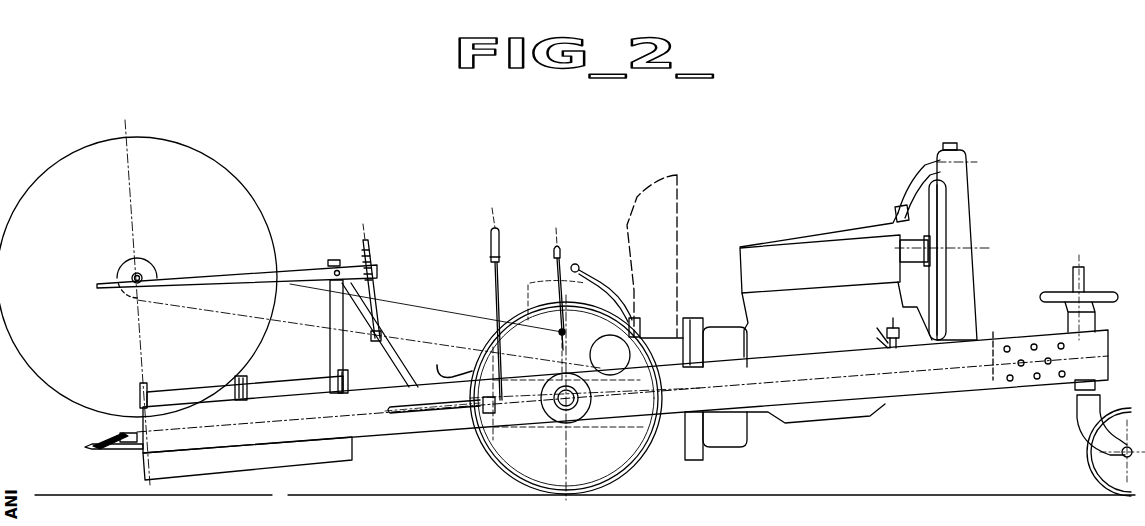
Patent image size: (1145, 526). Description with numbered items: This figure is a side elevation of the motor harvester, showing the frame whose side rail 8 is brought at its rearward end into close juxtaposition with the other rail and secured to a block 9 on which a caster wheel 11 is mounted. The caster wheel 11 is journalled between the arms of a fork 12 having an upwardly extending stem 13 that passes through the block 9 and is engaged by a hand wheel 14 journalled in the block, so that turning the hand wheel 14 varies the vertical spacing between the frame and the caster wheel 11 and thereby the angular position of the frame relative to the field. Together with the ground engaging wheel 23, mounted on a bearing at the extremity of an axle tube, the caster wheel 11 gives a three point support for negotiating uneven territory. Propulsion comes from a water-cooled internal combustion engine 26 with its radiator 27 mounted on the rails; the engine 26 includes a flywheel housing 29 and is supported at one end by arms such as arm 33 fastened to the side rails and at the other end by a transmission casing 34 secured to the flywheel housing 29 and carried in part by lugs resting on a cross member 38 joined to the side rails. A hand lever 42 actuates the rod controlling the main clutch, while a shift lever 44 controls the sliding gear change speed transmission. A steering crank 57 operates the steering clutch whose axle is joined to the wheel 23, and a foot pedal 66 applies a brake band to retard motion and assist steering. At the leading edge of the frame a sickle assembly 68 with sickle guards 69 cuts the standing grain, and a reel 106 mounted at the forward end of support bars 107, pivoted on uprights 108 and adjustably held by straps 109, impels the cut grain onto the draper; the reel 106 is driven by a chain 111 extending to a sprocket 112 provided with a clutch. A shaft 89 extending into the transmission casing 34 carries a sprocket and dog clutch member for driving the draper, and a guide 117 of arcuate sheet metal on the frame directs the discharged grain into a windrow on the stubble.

The side rail 8 is at (813, 392).
The block 9 is at (1020, 338).
The caster wheel 11 is at (1090, 470).
The fork 12 is at (1078, 416).
The stem 13 is at (1072, 280).
The hand wheel 14 is at (1108, 292).
The wheel 23 is at (637, 463).
The internal combustion engine 26 is at (823, 246).
The radiator 27 is at (970, 222).
The flywheel housing 29 is at (724, 328).
The arm 33 is at (886, 350).
The transmission casing 34 is at (672, 425).
The cross member 38 is at (486, 440).
The hand lever 42 is at (553, 253).
The shift lever 44 is at (585, 268).
The steering crank 57 is at (491, 283).
The foot pedal 66 is at (443, 363).
The sickle assembly 68 is at (122, 449).
The sickle guards 69 is at (99, 443).
The shaft 89 is at (412, 415).
The reel 106 is at (247, 181).
The support bars 107 is at (315, 255).
The uprights 108 is at (330, 354).
The straps 109 is at (378, 290).
The chain 111 is at (196, 267).
The sprocket 112 is at (612, 368).
The guide 117 is at (322, 457).